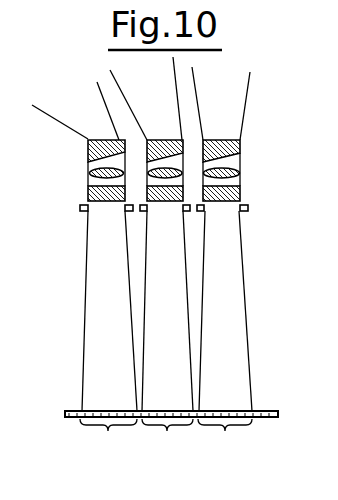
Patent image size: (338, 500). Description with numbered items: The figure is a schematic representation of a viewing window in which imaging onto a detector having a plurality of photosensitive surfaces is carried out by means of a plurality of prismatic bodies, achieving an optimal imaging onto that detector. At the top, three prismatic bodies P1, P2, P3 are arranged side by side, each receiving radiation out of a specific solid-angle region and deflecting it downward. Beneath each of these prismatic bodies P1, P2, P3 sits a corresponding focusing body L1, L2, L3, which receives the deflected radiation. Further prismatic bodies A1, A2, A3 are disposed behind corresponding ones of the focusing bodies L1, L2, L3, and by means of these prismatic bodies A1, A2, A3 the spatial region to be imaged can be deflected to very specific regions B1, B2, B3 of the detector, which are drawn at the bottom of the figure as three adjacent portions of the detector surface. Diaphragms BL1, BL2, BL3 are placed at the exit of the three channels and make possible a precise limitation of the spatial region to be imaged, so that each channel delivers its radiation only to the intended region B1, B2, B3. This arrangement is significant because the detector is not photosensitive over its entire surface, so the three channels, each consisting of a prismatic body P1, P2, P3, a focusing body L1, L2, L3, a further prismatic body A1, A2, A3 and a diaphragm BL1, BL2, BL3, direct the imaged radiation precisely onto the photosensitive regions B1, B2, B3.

The prismatic body P1 is at (100, 139).
The prismatic body P2 is at (163, 139).
The prismatic body P3 is at (222, 139).
The focusing body L1 is at (89, 174).
The focusing body L2 is at (183, 168).
The focusing body L3 is at (238, 175).
The diaphragm BL1 is at (80, 210).
The diaphragm BL2 is at (143, 212).
The diaphragm BL3 is at (247, 212).
The prismatic body A1 is at (105, 212).
The prismatic body A2 is at (170, 212).
The prismatic body A3 is at (225, 212).
The region of the detector B1 is at (108, 439).
The region of the detector B2 is at (167, 439).
The region of the detector B3 is at (225, 439).